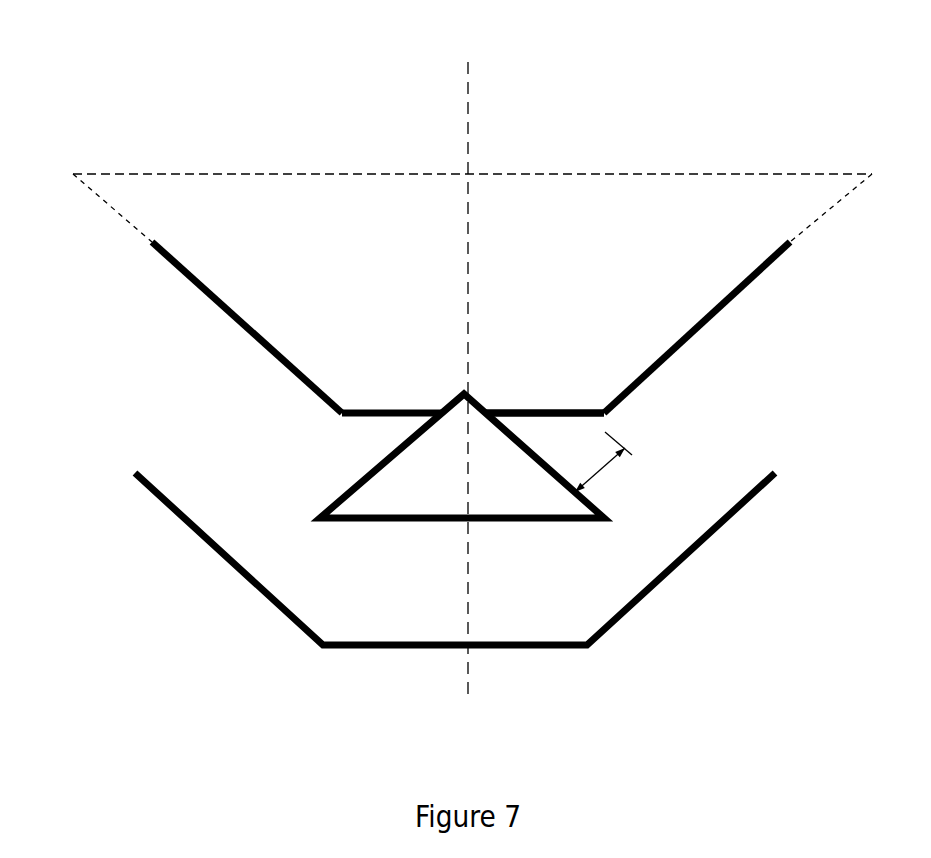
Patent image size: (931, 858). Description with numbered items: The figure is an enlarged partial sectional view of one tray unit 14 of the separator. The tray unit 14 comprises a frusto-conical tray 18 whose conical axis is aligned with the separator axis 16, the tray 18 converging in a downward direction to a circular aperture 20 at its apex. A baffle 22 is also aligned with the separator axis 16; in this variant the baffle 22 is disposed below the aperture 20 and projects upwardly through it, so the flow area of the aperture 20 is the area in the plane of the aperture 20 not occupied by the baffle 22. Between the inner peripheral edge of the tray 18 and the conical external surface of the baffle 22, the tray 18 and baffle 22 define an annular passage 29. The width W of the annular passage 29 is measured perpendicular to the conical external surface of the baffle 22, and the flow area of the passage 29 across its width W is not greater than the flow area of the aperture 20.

The tray unit 14 is at (203, 118).
The separator axis 16 is at (468, 118).
The frusto-conical tray 18 is at (230, 320).
The circular aperture 20 is at (397, 412).
The baffle 22 is at (390, 498).
The annular passage 29 is at (570, 452).
The width of the annular passage W is at (597, 478).